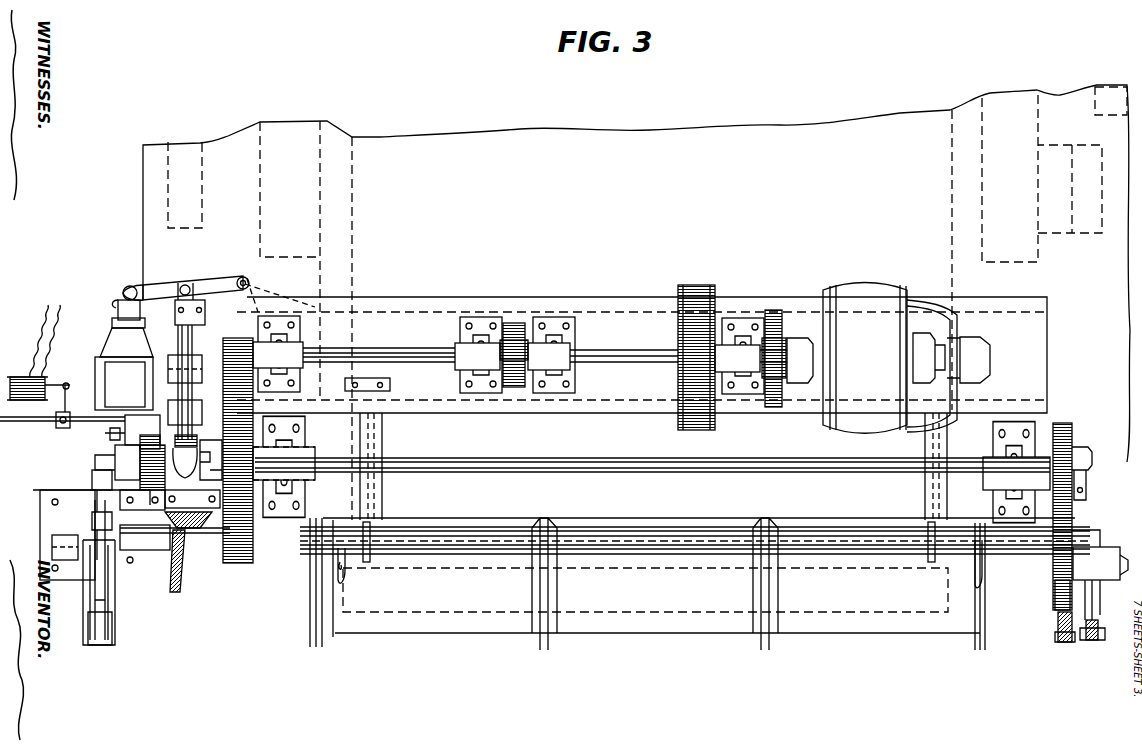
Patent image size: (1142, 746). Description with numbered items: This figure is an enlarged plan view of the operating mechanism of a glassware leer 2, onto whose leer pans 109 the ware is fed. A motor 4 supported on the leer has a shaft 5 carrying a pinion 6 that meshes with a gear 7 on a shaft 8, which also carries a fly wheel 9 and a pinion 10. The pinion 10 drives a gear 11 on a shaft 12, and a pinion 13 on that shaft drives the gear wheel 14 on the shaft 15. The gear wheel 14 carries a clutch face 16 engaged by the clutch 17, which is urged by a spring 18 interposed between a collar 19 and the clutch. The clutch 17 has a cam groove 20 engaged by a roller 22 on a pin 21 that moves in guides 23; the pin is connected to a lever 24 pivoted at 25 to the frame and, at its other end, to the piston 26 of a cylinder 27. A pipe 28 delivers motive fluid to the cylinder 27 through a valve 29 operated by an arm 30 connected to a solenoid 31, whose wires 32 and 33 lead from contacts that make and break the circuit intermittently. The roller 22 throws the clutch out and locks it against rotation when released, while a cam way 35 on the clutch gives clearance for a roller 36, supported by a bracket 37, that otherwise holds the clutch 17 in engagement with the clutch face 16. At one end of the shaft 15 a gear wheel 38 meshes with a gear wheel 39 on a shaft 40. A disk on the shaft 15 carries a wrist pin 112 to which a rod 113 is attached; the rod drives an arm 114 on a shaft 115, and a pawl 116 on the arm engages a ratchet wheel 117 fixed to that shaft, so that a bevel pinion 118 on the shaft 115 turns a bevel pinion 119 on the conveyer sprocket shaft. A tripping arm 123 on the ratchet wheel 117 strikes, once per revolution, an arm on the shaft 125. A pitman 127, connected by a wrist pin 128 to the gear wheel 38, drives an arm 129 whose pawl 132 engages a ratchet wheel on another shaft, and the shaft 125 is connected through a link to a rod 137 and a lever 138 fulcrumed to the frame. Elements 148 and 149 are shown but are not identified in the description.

The leer 2 is at (636, 361).
The motor 4 is at (906, 358).
The shaft 5 is at (800, 360).
The pinion 6 is at (784, 345).
The gear 7 is at (773, 310).
The shaft 8 is at (640, 355).
The fly wheel 9 is at (696, 344).
The pinion 10 is at (515, 345).
The gear 11 is at (514, 330).
The shaft 12 is at (405, 350).
The pinion 13 is at (258, 312).
The gear wheel 14 is at (238, 565).
The shaft 15 is at (597, 470).
The clutch face 16 is at (265, 445).
The clutch 17 is at (255, 462).
The spring 18 is at (130, 455).
The collar 19 is at (95, 458).
The cam groove 20 is at (185, 470).
The pin 21 is at (178, 338).
The roller 22 is at (192, 435).
The guides 23 is at (198, 357).
The lever 24 is at (207, 285).
The pivot 25 is at (243, 278).
The piston 26 is at (118, 305).
The cylinder 27 is at (124, 369).
The pipe 28 is at (35, 420).
The valve 29 is at (60, 428).
The arm 30 is at (58, 410).
The solenoid 31 is at (60, 383).
The wire 32 is at (32, 340).
The wire 33 is at (49, 332).
The cam way 35 is at (192, 498).
The roller 36 is at (112, 431).
The bracket 37 is at (142, 418).
The gear wheel 38 is at (1063, 423).
The gear wheel 39 is at (1060, 600).
The shaft 40 is at (1100, 575).
The leer pans 109 is at (680, 615).
The wrist pin 112 is at (92, 477).
The rod 113 is at (50, 505).
The arm 114 is at (112, 640).
The shaft 115 is at (52, 548).
The pawl 116 is at (110, 628).
The ratchet wheel 117 is at (112, 598).
The bevel pinion 118 is at (118, 585).
The bevel pinion 119 is at (175, 535).
The tripping arm 123 is at (185, 570).
The shaft 125 is at (408, 527).
The pitman 127 is at (1086, 488).
The wrist pin 128 is at (1090, 455).
The arm 129 is at (1060, 625).
The pawl 132 is at (1090, 642).
The rod 137 is at (370, 558).
The lever 138 is at (383, 455).
The hook 148 is at (342, 572).
The shaft 149 is at (420, 560).